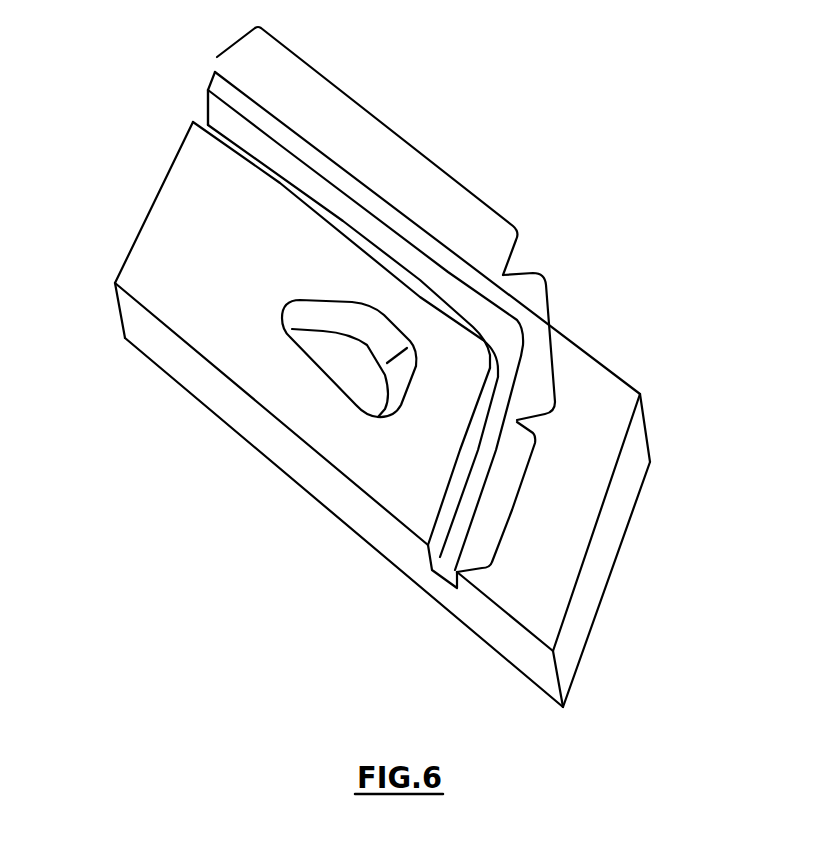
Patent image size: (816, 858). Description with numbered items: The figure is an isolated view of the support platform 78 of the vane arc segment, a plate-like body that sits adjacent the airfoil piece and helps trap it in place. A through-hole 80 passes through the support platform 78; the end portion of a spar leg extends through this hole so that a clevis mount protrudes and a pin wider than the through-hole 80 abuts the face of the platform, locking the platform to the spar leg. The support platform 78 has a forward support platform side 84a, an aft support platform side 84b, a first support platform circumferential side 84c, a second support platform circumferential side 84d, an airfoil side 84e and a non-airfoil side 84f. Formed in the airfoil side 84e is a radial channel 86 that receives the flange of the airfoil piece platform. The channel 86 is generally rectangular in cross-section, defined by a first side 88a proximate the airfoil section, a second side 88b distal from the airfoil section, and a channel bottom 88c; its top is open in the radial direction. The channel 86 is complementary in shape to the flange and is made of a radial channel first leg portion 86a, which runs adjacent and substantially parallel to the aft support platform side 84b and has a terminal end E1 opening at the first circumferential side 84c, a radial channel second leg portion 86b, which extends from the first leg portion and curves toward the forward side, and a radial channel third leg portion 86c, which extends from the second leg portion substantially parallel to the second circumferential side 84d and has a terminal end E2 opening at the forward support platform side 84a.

The support platform 78 is at (356, 367).
The through-hole 80 is at (353, 320).
The forward support platform side 84a is at (122, 315).
The aft support platform side 84b is at (597, 572).
The first support platform circumferential side 84c is at (482, 625).
The second support platform circumferential side 84d is at (568, 338).
The airfoil side 84e is at (610, 397).
The non-airfoil side 84f is at (423, 592).
The radial channel 86 is at (397, 310).
The radial channel first leg portion 86a is at (512, 510).
The radial channel second leg portion 86b is at (553, 357).
The radial channel third leg portion 86c is at (387, 125).
The first side 88a is at (457, 478).
The second side 88b is at (420, 266).
The channel bottom 88c is at (453, 537).
The terminal end E1 is at (443, 557).
The terminal end E2 is at (206, 126).